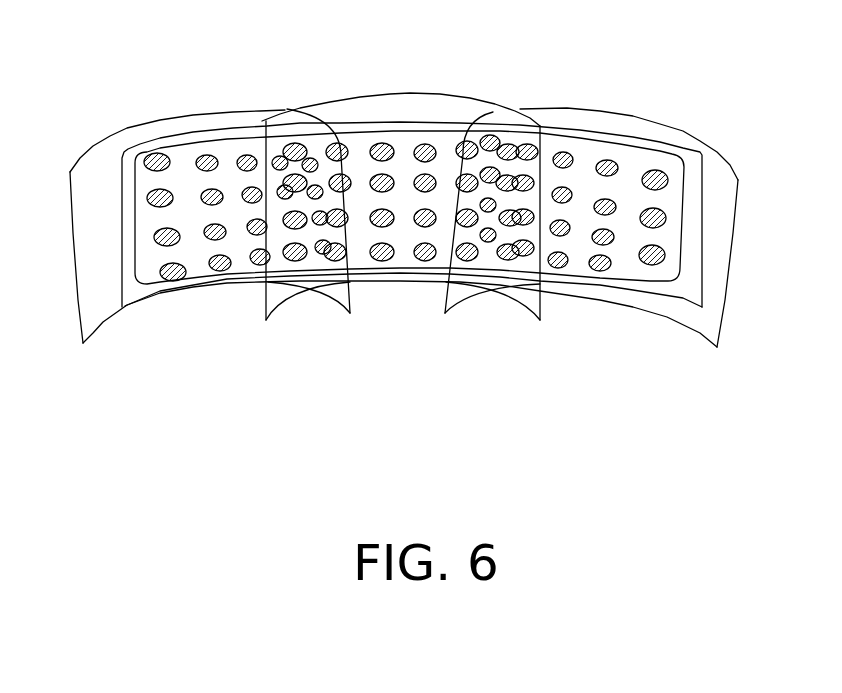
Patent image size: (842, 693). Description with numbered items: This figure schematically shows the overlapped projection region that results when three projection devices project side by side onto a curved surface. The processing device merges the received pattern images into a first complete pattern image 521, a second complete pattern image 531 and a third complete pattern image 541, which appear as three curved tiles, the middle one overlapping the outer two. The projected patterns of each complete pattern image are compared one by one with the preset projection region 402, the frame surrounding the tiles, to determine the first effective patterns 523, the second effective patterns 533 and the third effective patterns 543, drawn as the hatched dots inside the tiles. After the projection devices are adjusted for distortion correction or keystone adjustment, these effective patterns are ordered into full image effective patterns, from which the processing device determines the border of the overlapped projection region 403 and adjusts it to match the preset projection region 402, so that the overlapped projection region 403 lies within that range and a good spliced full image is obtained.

The preset projection region 402 is at (705, 176).
The overlapped projection region 403 is at (680, 264).
The first complete pattern image 521 is at (242, 108).
The first effective patterns 523 is at (162, 153).
The second complete pattern image 531 is at (431, 90).
The second effective patterns 533 is at (381, 148).
The third complete pattern image 541 is at (658, 120).
The third effective patterns 543 is at (565, 152).